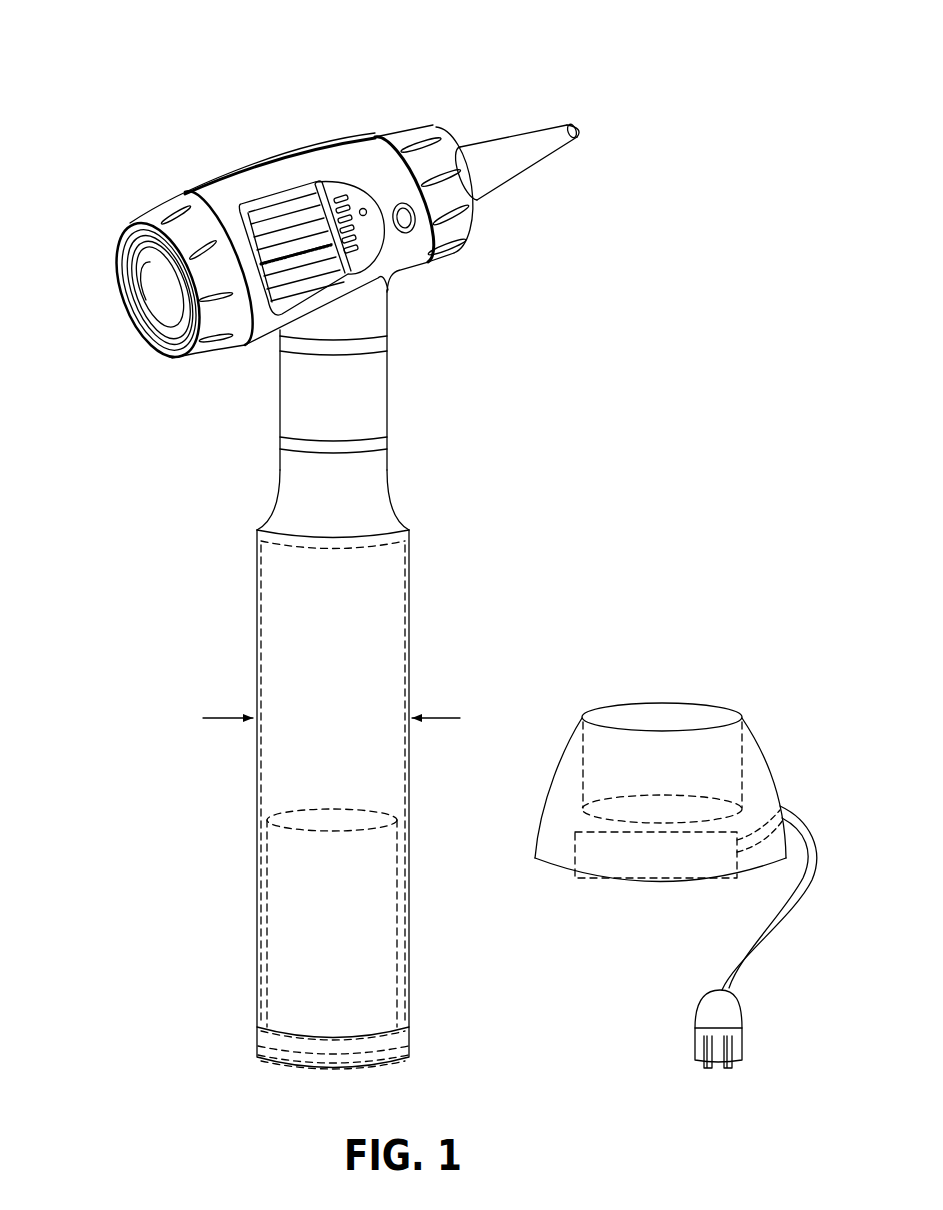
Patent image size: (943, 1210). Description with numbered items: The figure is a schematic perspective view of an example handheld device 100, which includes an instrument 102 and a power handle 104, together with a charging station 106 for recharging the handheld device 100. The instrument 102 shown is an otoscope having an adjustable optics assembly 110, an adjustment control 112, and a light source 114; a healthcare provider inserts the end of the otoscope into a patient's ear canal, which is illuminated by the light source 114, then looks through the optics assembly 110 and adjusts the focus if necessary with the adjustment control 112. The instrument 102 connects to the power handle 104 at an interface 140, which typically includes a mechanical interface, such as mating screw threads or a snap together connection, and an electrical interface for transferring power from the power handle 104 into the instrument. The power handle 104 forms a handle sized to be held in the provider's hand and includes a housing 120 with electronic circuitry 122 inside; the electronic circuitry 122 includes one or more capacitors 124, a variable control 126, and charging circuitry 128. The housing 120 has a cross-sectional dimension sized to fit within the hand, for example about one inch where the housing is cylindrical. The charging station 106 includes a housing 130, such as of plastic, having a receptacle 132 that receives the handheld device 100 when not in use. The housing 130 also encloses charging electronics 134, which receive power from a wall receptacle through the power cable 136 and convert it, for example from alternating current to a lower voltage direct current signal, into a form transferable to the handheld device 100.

The handheld device 100 is at (122, 140).
The instrument 102 is at (248, 184).
The power handle 104 is at (147, 546).
The charging station 106 is at (563, 775).
The adjustable optics assembly 110 is at (177, 291).
The adjustment control 112 is at (297, 218).
The light source 114 is at (582, 133).
The housing 120 is at (256, 548).
The electronic circuitry 122 is at (253, 572).
The capacitor 124 is at (268, 860).
The variable control 126 is at (372, 501).
The charging circuitry 128 is at (257, 1047).
The housing 130 is at (760, 758).
The receptacle 132 is at (697, 717).
The charging electronics 134 is at (572, 864).
The power cable 136 is at (711, 1012).
The interface 140 is at (414, 436).